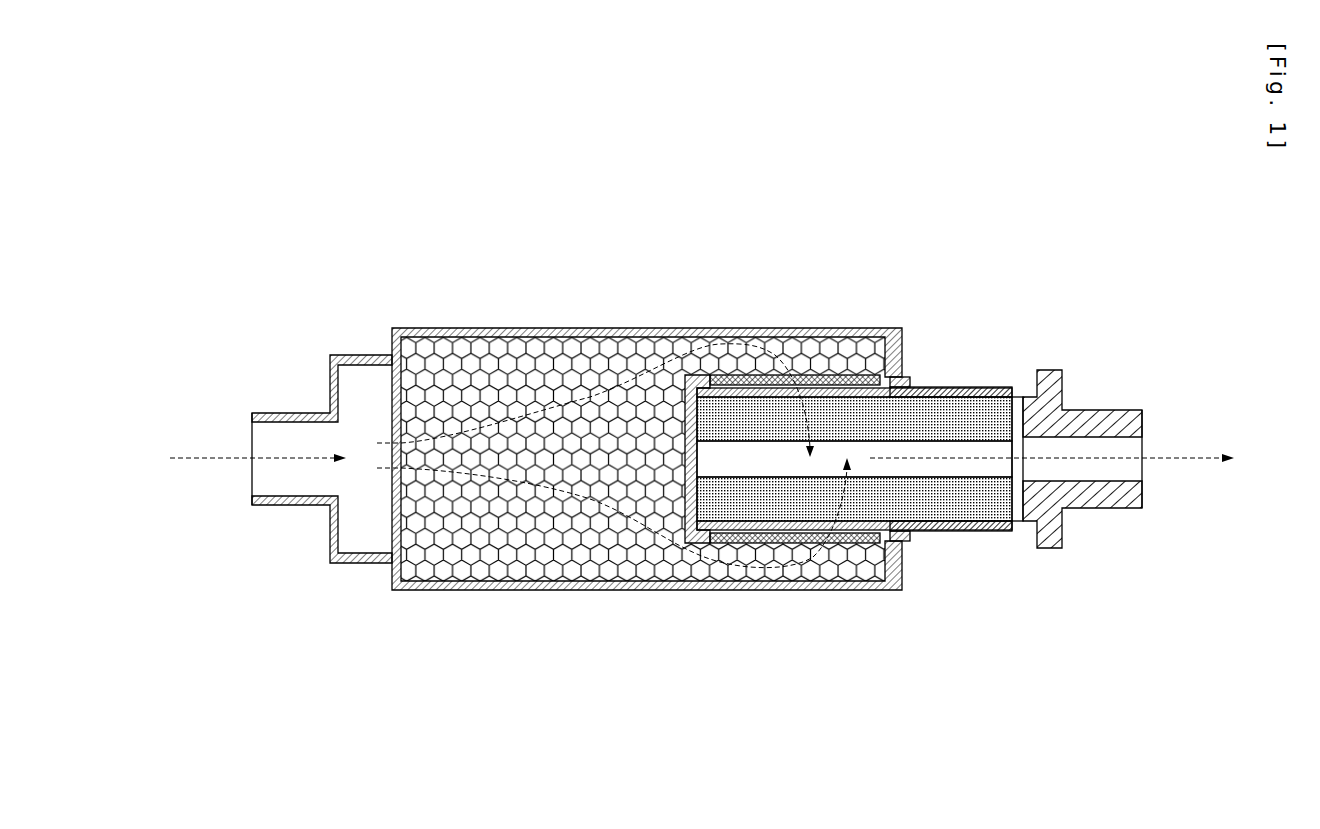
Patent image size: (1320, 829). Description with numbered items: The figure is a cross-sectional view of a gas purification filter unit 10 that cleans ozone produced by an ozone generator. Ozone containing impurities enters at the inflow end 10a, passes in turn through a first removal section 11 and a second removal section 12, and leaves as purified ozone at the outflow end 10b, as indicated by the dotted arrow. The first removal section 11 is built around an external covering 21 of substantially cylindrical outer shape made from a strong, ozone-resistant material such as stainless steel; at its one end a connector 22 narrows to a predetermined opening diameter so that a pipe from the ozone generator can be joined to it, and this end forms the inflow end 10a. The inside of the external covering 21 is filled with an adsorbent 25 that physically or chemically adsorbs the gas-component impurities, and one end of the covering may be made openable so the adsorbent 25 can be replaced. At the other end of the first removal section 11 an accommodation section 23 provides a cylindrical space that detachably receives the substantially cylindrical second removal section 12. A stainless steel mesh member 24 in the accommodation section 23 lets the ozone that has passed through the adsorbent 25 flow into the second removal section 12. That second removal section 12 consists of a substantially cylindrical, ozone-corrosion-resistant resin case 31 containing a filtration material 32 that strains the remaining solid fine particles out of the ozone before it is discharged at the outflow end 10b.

The gas purification filter unit 10 is at (436, 306).
The inflow end 10a is at (252, 482).
The outflow end 10b is at (1143, 441).
The first removal section 11 is at (609, 322).
The second removal section 12 is at (919, 448).
The external covering 21 is at (503, 328).
The connector 22 is at (293, 413).
The accommodation section 23 is at (722, 349).
The mesh member 24 is at (833, 376).
The adsorbent 25 is at (643, 455).
The resin case 31 is at (987, 387).
The filtration material 32 is at (940, 396).